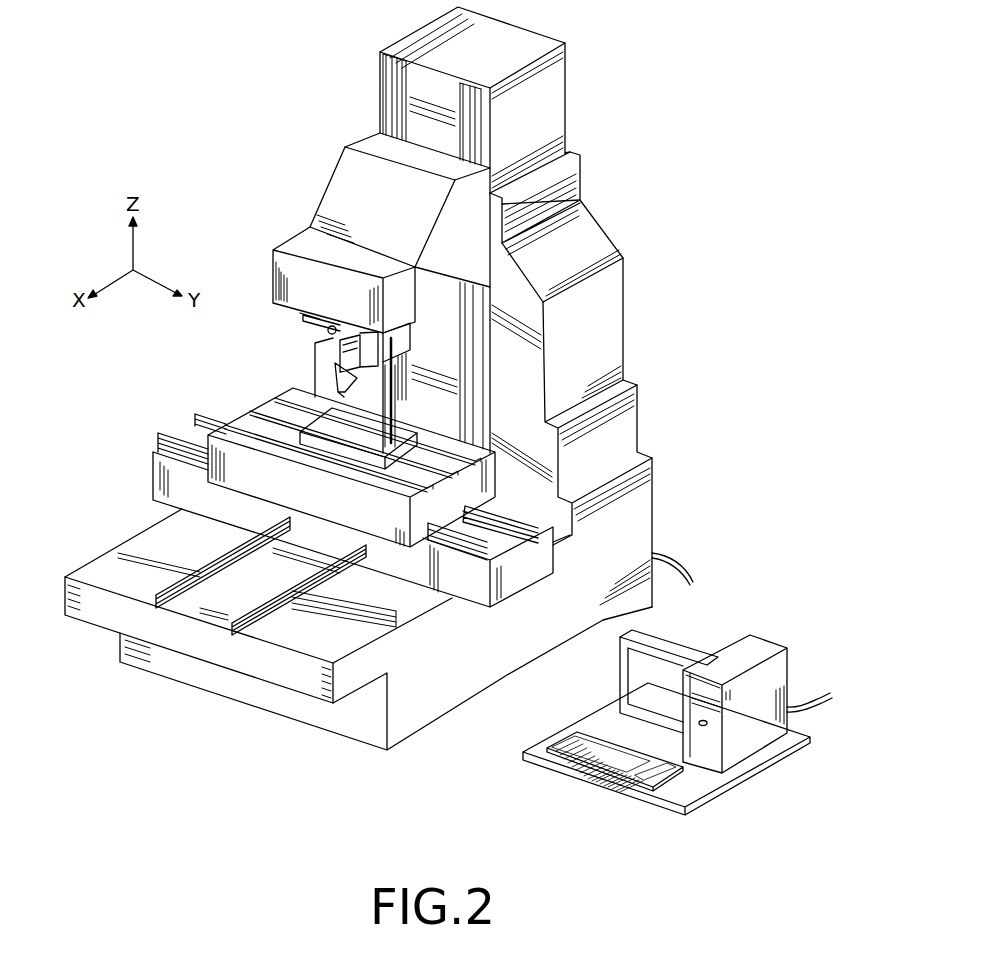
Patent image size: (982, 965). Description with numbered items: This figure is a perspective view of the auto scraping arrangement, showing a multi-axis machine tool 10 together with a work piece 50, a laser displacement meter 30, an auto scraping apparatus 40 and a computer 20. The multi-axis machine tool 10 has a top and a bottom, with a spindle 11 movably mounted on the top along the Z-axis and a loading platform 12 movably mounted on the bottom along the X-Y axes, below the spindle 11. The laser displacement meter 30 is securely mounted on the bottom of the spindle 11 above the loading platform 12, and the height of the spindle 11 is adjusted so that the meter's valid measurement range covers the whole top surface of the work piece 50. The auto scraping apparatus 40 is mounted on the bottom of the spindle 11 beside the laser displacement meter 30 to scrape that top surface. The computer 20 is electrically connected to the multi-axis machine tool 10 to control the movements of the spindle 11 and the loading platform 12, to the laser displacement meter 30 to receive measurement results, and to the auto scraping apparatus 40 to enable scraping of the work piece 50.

The multi-axis machine tool 10 is at (388, 378).
The spindle 11 is at (345, 187).
The loading platform 12 is at (240, 482).
The computer 20 is at (719, 633).
The laser displacement meter 30 is at (413, 335).
The auto scraping apparatus 40 is at (332, 368).
The work piece 50 is at (351, 449).